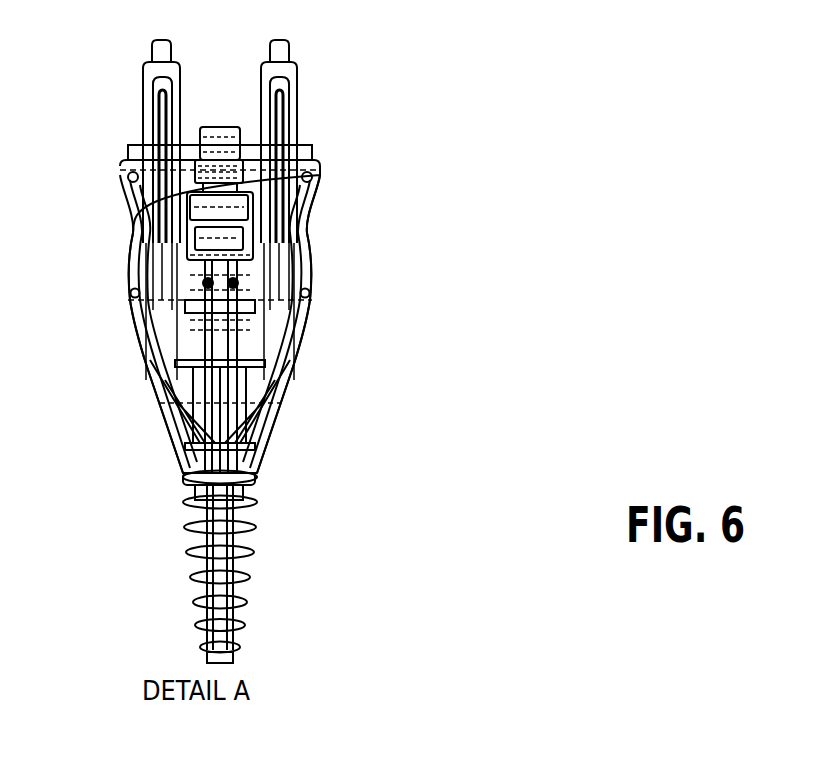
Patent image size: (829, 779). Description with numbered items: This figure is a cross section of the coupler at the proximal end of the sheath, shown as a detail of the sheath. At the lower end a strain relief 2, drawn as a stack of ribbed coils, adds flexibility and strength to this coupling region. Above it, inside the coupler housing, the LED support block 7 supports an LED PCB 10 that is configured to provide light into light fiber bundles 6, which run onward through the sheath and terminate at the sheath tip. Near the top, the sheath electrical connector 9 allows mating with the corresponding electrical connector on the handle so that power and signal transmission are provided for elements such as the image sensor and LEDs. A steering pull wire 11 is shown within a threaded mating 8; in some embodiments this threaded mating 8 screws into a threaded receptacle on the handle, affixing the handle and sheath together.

The strain relief 2 is at (247, 542).
The light fiber bundles 6 is at (240, 325).
The LED support block 7 is at (243, 288).
The threaded mating 8 is at (290, 112).
The sheath electrical connector 9 is at (215, 127).
The LED PCB 10 is at (150, 215).
The steering pull wire 11 is at (150, 367).